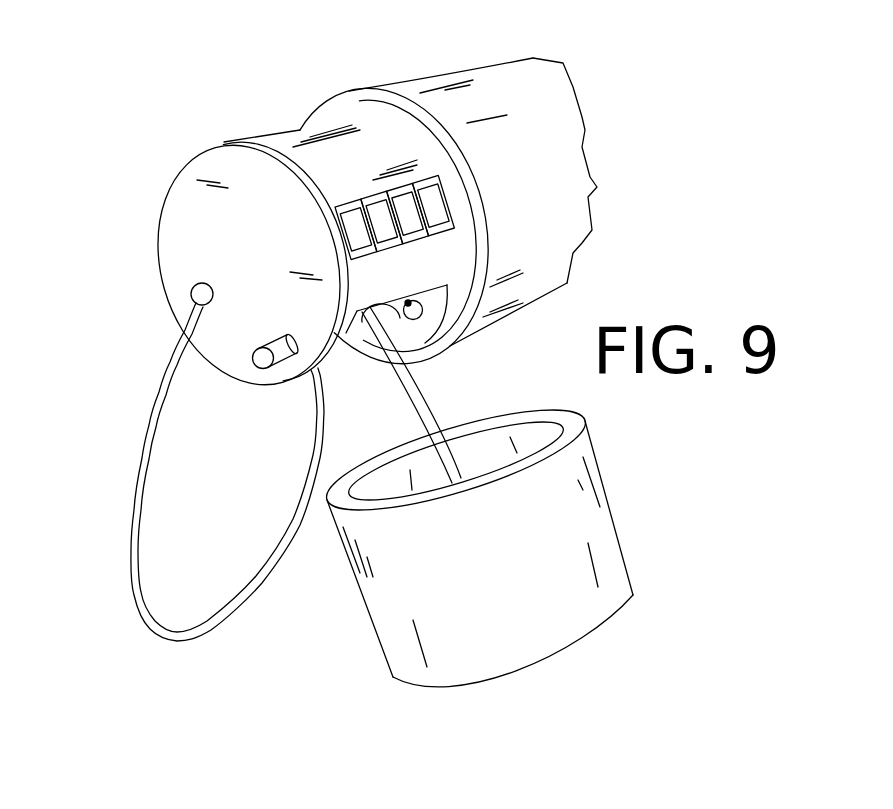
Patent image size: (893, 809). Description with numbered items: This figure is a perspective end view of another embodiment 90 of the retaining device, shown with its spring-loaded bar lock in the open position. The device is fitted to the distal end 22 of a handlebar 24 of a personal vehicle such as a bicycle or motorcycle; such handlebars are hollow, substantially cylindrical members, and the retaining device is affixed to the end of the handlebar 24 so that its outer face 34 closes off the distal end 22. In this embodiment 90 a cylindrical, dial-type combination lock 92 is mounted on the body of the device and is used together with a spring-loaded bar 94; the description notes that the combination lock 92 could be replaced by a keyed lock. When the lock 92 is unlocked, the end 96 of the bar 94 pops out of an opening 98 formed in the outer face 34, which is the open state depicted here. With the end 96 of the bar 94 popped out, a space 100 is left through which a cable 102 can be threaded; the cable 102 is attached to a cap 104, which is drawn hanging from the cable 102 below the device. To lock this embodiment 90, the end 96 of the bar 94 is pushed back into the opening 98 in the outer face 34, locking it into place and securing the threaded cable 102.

The embodiment of the retaining device 90 is at (251, 100).
The handlebar 24 is at (505, 82).
The distal end of the handlebar 22 is at (455, 342).
The outer face 34 is at (197, 243).
The dial-type combination lock 92 is at (383, 200).
The spring-loaded bar 94 is at (364, 343).
The space 100 is at (405, 300).
The end of the bar 96 is at (263, 358).
The opening 98 is at (300, 348).
The cable 102 is at (180, 352).
The cap 104 is at (352, 590).